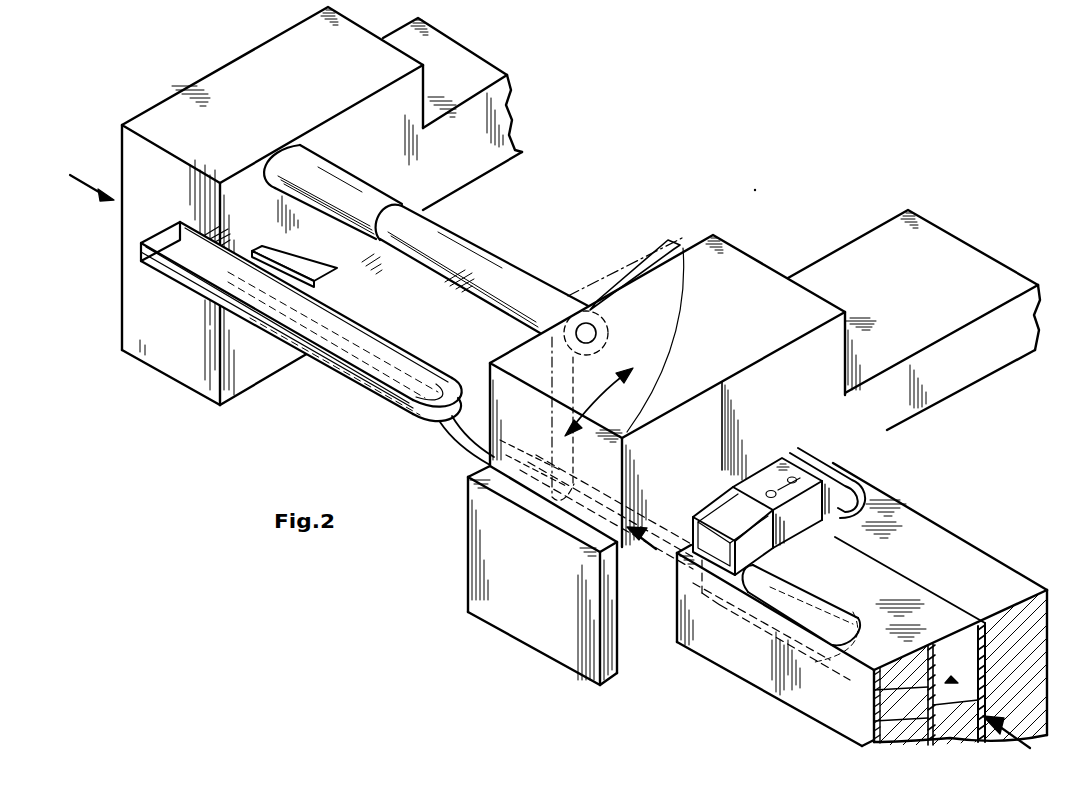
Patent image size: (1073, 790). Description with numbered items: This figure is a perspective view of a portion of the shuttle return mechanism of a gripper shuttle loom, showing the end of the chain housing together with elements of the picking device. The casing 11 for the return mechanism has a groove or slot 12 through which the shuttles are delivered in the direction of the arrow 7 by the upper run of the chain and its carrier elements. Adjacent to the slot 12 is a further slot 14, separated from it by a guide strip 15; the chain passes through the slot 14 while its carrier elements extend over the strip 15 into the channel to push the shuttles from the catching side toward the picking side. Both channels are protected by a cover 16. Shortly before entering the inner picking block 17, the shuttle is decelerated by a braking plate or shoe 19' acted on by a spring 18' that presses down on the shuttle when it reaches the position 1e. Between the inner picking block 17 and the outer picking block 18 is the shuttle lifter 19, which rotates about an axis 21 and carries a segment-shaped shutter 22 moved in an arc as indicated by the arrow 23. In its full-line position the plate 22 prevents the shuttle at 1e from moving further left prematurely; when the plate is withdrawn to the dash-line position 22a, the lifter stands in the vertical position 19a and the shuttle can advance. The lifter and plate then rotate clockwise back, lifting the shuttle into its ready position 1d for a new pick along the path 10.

The path 10 is at (92, 173).
The outer picking block 18 is at (322, 206).
The ready position 1d is at (176, 275).
The shuttle lifter 19 is at (422, 239).
The segment-shaped shutter 22 is at (462, 428).
The dash-line position of plate 22a is at (617, 272).
The axis 21 is at (604, 330).
The arrow 23 is at (606, 408).
The vertical position of shuttle lifter 19a is at (575, 508).
The inner picking block 17 is at (902, 423).
The arrow 7 is at (651, 549).
The spring 18' is at (772, 511).
The plate or shoe 19' is at (802, 608).
The casing 11 is at (1005, 588).
The cover 16 is at (956, 608).
The further slot 14 is at (985, 680).
The groove or slot 12 is at (874, 690).
The guide strip 15 is at (874, 721).
The shuttle position 1e is at (752, 616).